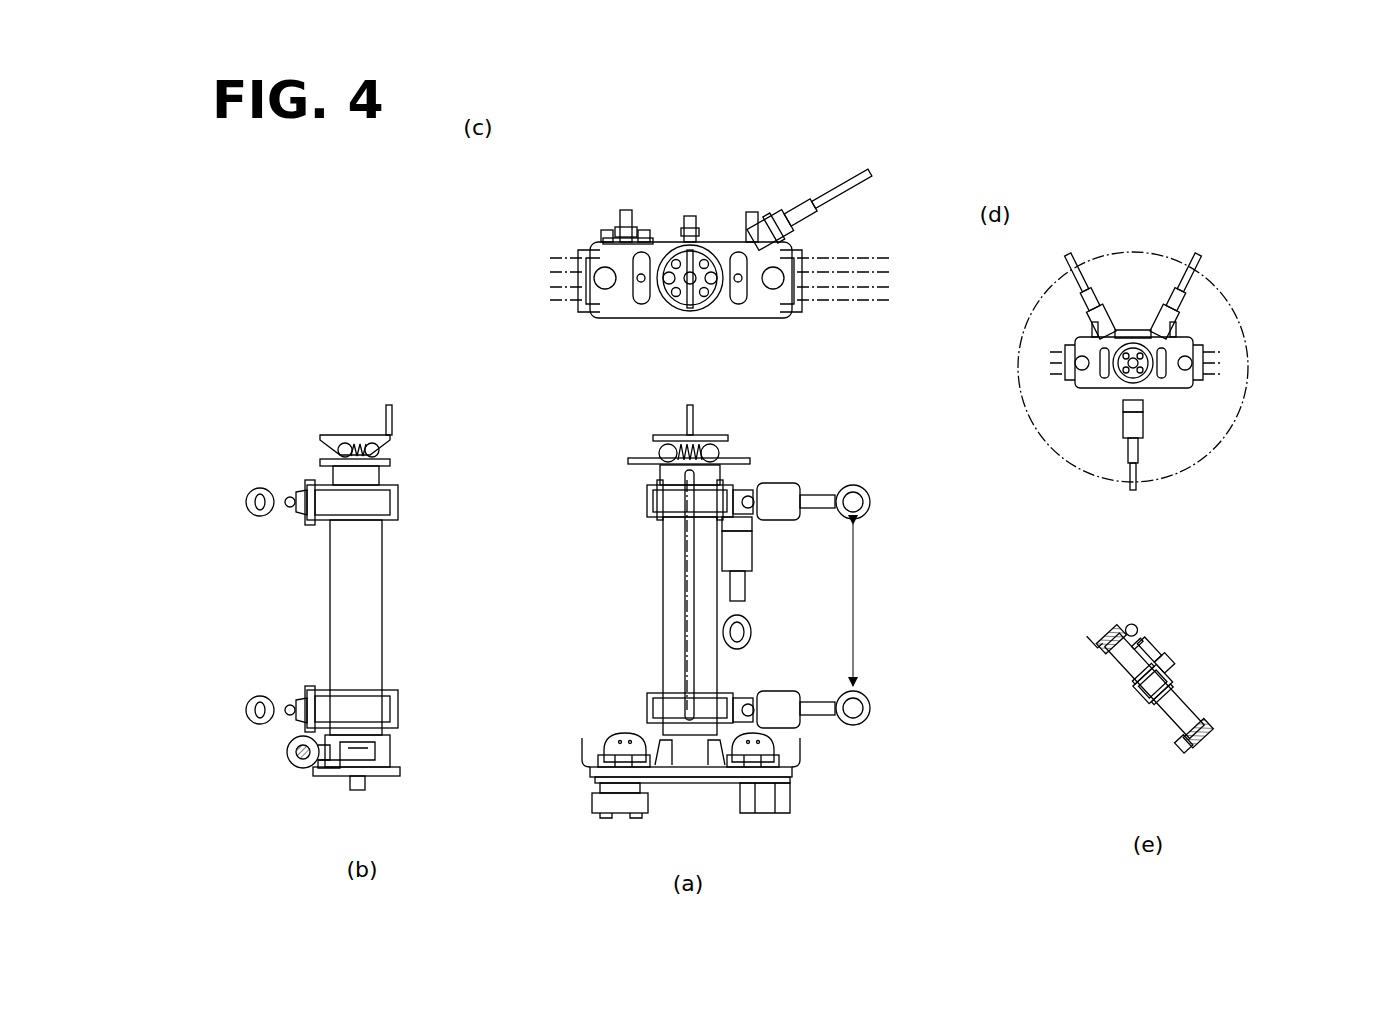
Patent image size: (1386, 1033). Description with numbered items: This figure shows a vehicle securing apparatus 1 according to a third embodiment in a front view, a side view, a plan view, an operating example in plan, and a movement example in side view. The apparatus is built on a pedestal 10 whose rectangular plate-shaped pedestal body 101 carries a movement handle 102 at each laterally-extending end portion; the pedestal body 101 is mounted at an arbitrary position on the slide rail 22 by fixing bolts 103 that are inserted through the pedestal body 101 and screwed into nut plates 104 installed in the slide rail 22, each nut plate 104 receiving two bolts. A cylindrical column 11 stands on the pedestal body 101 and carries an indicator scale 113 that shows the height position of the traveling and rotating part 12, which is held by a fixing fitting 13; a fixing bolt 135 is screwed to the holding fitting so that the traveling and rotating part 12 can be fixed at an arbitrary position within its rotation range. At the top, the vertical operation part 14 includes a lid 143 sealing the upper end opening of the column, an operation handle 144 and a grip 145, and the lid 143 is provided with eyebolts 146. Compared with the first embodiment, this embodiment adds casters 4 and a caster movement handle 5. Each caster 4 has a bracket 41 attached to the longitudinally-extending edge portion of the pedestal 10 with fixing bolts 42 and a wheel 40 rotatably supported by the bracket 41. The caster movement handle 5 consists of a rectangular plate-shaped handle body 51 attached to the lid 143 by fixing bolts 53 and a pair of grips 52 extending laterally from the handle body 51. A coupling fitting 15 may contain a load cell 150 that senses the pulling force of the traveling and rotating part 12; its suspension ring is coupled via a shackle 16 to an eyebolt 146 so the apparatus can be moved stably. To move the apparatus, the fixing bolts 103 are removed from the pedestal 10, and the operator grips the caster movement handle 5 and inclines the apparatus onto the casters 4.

The vehicle securing apparatus 1 is at (228, 355).
The caster 4 is at (660, 160).
The caster movement handle 5 is at (660, 124).
The pedestal 10 is at (680, 780).
The column 11 is at (383, 580).
The traveling and rotating part 12 is at (400, 502).
The fixing fitting 13 is at (710, 245).
The vertical operation part 14 is at (675, 312).
The coupling fitting 15 is at (876, 176).
The shackle 16 is at (1132, 622).
The slide rail 22 is at (845, 265).
The wheel 40 is at (624, 212).
The bracket 41 is at (624, 235).
The fixing bolt 42 is at (607, 240).
The handle body 51 is at (795, 215).
The grip 52 is at (642, 250).
The fixing bolt 53 is at (760, 245).
The pedestal body 101 is at (600, 312).
The movement handle 102 is at (585, 285).
The fixing bolt 103 is at (640, 300).
The nut plate 104 is at (600, 805).
The indicator scale 113 is at (686, 615).
The fixing bolt 135 is at (690, 212).
The lid 143 is at (385, 460).
The operation handle 144 is at (355, 435).
The grip 145 is at (389, 408).
The eyebolt 146 is at (375, 450).
The load cell 150 is at (780, 500).